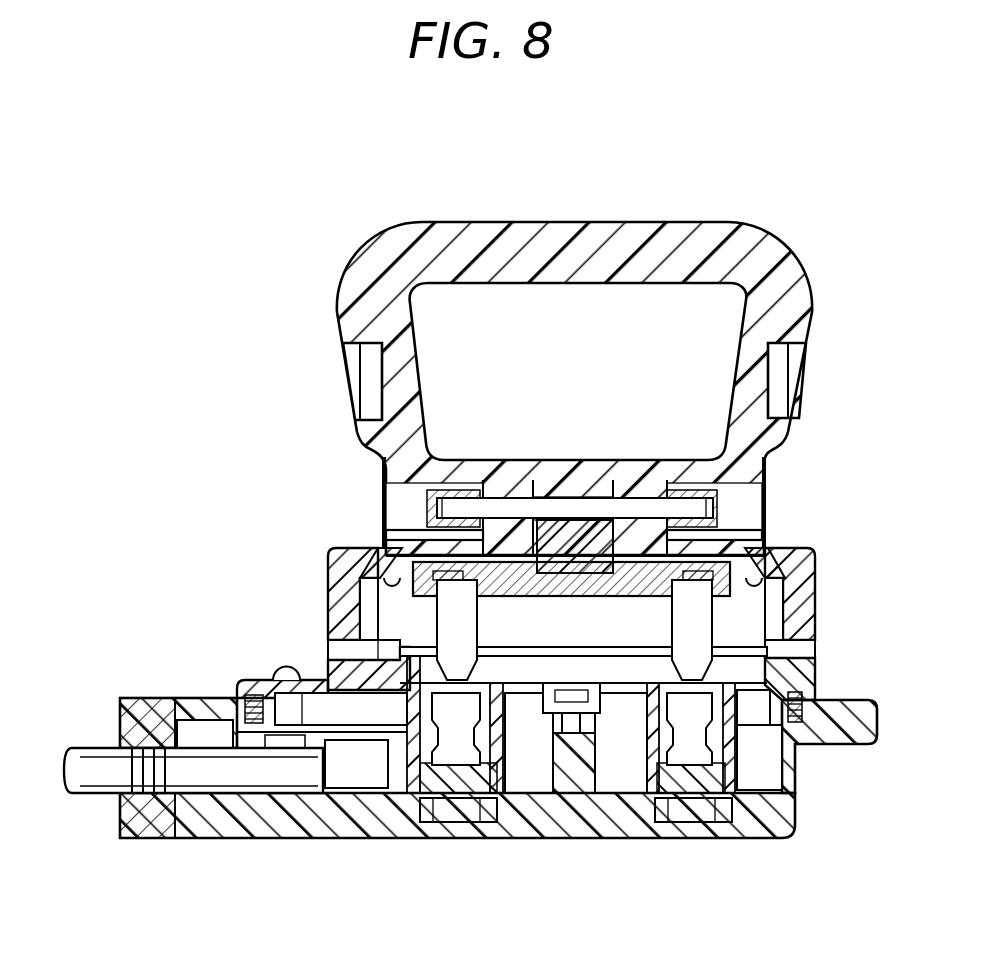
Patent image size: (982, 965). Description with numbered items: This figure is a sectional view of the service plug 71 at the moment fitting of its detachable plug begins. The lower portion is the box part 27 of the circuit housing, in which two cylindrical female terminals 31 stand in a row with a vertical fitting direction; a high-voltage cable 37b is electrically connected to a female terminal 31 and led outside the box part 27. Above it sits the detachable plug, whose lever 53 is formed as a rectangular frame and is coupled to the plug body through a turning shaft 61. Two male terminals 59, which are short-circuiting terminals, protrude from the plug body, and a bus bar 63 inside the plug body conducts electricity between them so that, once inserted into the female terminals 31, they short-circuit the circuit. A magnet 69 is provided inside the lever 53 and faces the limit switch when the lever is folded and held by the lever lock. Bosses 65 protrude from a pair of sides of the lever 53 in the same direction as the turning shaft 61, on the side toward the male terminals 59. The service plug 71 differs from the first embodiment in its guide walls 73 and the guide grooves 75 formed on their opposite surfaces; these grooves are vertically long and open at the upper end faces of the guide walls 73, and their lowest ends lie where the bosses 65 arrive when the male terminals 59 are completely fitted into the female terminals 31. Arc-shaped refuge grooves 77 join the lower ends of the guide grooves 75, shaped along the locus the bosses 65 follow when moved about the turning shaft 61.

The service plug 71 is at (734, 195).
The lever 53 is at (428, 222).
The magnet 69 is at (795, 375).
The turning shaft 61 is at (648, 500).
The bus bar 63 is at (500, 578).
The bosses 65 is at (368, 548).
The guide walls 73 is at (328, 551).
The guide grooves 75 is at (370, 602).
The arc-shaped refuge grooves 77 is at (345, 650).
The male terminals 59 is at (458, 632).
The female terminals 31 is at (455, 750).
The box part 27 is at (345, 835).
The high-voltage cable 37b is at (88, 748).